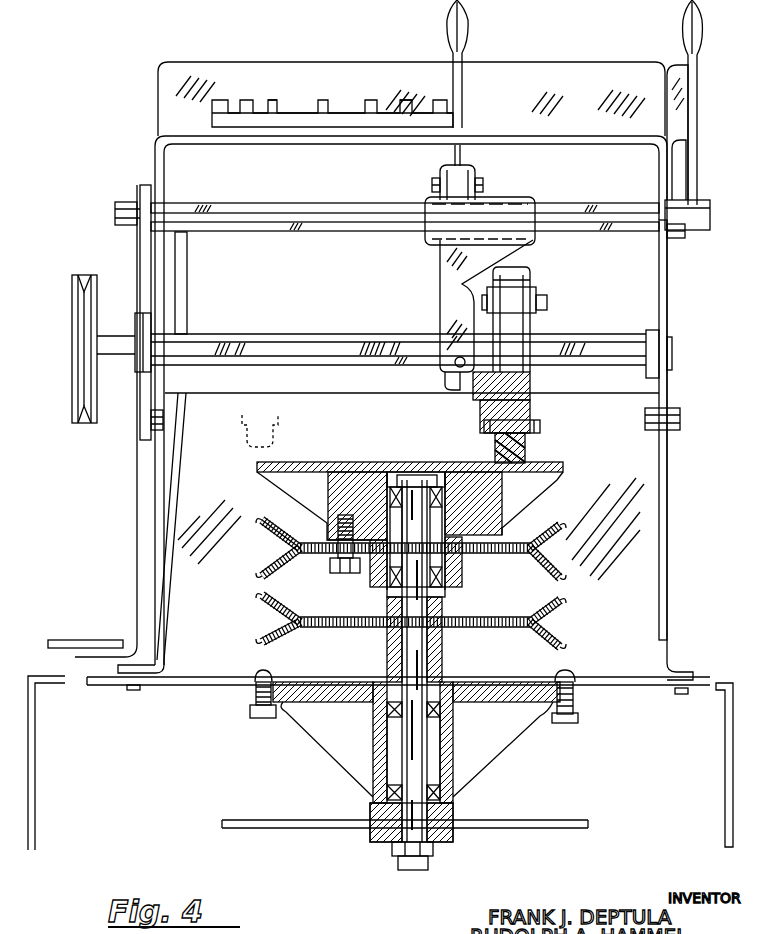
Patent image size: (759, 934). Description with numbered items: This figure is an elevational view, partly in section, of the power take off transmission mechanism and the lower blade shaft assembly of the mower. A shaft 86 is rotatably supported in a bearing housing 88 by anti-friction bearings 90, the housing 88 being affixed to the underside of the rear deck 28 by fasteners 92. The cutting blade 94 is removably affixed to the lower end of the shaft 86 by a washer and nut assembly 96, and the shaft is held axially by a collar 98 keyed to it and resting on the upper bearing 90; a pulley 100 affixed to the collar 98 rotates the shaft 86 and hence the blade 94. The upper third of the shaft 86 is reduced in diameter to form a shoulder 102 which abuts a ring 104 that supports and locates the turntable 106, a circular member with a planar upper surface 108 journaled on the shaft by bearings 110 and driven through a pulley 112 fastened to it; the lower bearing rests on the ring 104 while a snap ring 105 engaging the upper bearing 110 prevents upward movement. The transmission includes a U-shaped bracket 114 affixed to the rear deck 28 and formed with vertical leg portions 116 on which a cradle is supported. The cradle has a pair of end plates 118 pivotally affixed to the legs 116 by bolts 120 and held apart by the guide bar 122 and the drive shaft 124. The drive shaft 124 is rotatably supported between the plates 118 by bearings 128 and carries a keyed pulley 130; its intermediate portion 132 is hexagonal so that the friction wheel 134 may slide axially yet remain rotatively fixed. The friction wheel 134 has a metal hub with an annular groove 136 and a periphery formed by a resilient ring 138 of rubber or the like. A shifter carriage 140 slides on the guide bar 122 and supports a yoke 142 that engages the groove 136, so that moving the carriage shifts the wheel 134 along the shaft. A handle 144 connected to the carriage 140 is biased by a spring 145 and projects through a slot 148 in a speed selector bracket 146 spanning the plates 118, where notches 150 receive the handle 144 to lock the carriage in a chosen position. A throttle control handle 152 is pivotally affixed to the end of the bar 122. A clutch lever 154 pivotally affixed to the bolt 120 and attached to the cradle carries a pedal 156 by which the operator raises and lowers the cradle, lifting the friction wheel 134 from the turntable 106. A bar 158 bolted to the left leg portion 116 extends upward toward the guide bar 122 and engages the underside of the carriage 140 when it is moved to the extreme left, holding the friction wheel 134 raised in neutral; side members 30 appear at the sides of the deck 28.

The speed selector bracket 146 is at (590, 72).
The slot 148 is at (332, 114).
The notches 150 is at (274, 100).
The handle 144 is at (463, 88).
The throttle control handle 152 is at (697, 92).
The spring 145 is at (440, 172).
The shifter carriage 140 is at (520, 197).
The guide bar 122 is at (248, 232).
The end plates 118 is at (151, 264).
The bar 158 is at (187, 305).
The drive shaft 124 is at (288, 334).
The intermediate portion 132 is at (370, 334).
The U-shaped bracket 114 is at (334, 393).
The bearings 128 is at (135, 330).
The pulley 130 is at (72, 392).
The yoke 142 is at (440, 312).
The friction wheel 134 is at (530, 400).
The annular groove 136 is at (455, 390).
The resilient ring 138 is at (495, 455).
The bolts 120 is at (680, 420).
The clutch lever 154 is at (137, 456).
The pedal 156 is at (86, 640).
The vertical leg portions 116 is at (170, 480).
The planar upper surface 108 is at (322, 462).
The turntable 106 is at (340, 492).
The snap ring 105 is at (440, 478).
The bearings 110 is at (408, 472).
The shoulder 102 is at (387, 592).
The ring 104 is at (445, 593).
The collar 98 is at (445, 658).
The pulley 112 is at (308, 556).
The pulley 100 is at (330, 628).
The shaft 86 is at (390, 745).
The bearing housing 88 is at (453, 750).
The anti-friction bearings 90 is at (453, 712).
The cutting blade 94 is at (344, 830).
The washer and nut assembly 96 is at (433, 850).
The fasteners 92 is at (262, 720).
The rear deck 28 is at (196, 686).
The side wall 30 is at (33, 768).